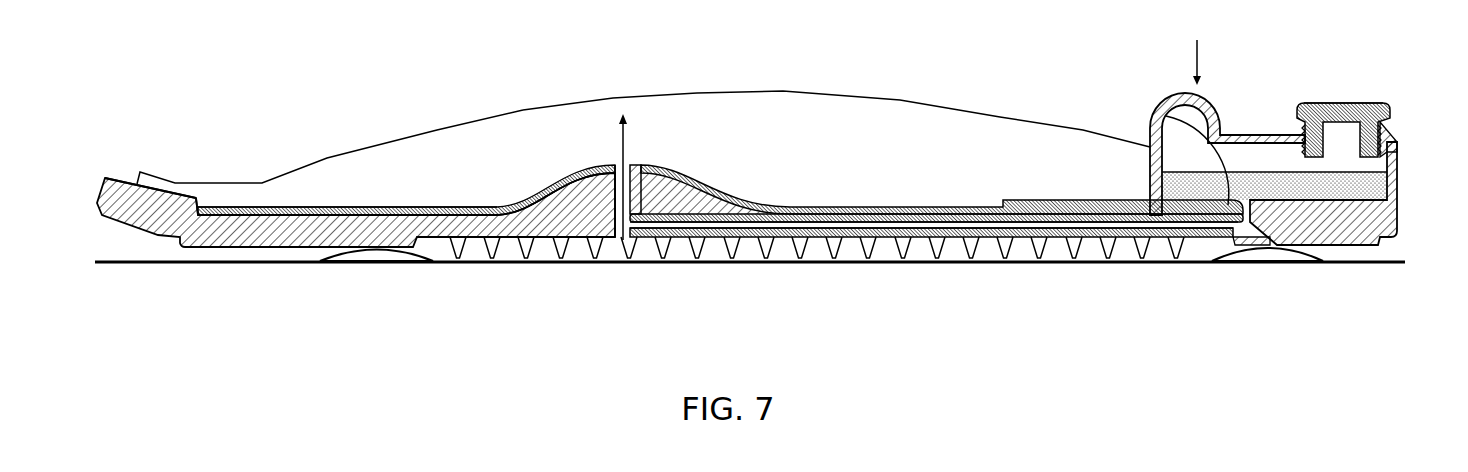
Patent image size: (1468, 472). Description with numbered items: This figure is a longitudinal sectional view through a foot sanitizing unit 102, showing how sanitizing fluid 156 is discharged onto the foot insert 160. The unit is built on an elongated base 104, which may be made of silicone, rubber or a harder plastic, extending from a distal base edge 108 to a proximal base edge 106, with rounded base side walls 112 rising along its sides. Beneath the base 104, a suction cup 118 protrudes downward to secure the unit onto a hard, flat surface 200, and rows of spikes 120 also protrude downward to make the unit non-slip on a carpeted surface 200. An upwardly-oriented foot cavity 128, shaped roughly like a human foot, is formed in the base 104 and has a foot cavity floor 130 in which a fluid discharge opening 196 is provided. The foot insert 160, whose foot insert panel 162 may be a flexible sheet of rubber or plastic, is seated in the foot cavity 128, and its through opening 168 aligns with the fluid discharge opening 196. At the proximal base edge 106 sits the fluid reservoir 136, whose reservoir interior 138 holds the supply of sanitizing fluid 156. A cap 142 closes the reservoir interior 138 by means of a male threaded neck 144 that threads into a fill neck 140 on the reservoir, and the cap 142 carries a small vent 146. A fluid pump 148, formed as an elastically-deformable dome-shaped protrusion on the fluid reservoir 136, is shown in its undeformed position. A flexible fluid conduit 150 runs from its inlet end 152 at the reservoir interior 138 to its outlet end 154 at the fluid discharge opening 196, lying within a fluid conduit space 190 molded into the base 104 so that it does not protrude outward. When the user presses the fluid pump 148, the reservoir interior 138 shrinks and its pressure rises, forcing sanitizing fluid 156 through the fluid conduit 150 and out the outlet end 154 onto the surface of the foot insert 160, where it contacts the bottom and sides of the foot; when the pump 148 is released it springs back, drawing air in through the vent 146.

The foot sanitizing unit 102 is at (357, 136).
The base 104 is at (246, 256).
The proximal base edge 106 is at (1394, 218).
The distal base edge 108 is at (101, 182).
The base side walls 112 is at (838, 110).
The suction cup 118 is at (388, 250).
The spikes 120 is at (1043, 254).
The foot cavity 128 is at (205, 195).
The foot cavity floor 130 is at (297, 193).
The fluid reservoir 136 is at (1404, 197).
The reservoir interior 138 is at (1271, 150).
The fill neck 140 is at (1384, 130).
The cap 142 is at (1358, 105).
The male threaded neck 144 is at (1333, 118).
The vent 146 is at (1340, 103).
The fluid pump 148 is at (1177, 92).
The fluid conduit 150 is at (927, 206).
The inlet end 152 is at (1152, 157).
The outlet end 154 is at (642, 188).
The sanitizing fluid 156 is at (625, 138).
The foot insert 160 is at (432, 200).
The foot insert panel 162 is at (508, 190).
The through opening 168 is at (607, 177).
The fluid conduit space 190 is at (717, 214).
The fluid discharge opening 196 is at (612, 162).
The surface 200 is at (1388, 263).